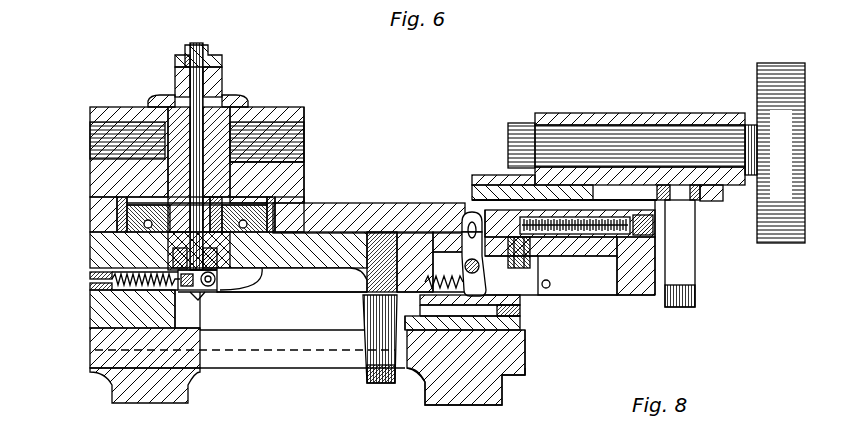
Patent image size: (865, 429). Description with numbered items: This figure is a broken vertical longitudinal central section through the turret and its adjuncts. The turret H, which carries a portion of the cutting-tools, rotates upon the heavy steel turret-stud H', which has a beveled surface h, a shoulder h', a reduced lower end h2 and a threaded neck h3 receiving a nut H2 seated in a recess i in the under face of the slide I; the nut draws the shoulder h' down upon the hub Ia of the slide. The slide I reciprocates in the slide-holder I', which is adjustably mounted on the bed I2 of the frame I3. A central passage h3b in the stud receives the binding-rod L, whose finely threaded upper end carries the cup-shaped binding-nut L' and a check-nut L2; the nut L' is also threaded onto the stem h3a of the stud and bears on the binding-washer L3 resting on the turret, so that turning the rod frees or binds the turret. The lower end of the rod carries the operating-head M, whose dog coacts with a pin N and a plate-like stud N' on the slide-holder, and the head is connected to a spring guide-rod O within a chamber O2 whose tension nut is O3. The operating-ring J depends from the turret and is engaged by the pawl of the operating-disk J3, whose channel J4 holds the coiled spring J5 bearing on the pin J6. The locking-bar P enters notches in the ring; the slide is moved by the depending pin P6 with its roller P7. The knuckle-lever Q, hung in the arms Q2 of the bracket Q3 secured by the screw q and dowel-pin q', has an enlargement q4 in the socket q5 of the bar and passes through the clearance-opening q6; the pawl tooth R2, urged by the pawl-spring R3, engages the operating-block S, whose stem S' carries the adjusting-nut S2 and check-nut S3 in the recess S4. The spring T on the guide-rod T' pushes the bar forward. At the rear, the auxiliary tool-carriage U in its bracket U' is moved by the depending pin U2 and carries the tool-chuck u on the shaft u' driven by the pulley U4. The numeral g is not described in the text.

The turret H is at (197, 140).
The turret-stud H' is at (179, 121).
The beveled surface h is at (149, 188).
The threaded neck h3 is at (175, 258).
The screw-threaded stem h3a is at (224, 82).
The central longitudinal passage h3b is at (305, 118).
The shoulder h' is at (274, 170).
The reduced lower end h2 is at (250, 205).
The binding-rod L is at (211, 82).
The binding-nut L' is at (209, 53).
The check-nut L2 is at (205, 47).
The binding-washer L3 is at (163, 97).
The hub of the slide Ia is at (120, 213).
The operating-ring J is at (125, 216).
The operating-disk J3 is at (128, 222).
The segmental channel J4 is at (92, 237).
The coiled spring J5 is at (300, 211).
The operating pin J6 is at (251, 292).
The groove g is at (140, 230).
The spring guide-rod O is at (92, 279).
The chamber O2 is at (100, 292).
The nut O3 is at (108, 289).
The nut H2 is at (222, 280).
The slide I is at (317, 318).
The slide-holder I' is at (117, 309).
The bed I2 is at (92, 345).
The frame I3 is at (125, 380).
The recess i is at (213, 270).
The pin N is at (219, 311).
The flat plate-like stud N' is at (187, 309).
The operating-head M is at (207, 298).
The locking-bar P is at (395, 240).
The depending pin P6 is at (382, 232).
The antifriction-roller P7 is at (367, 378).
The rearwardly-facing tooth R2 is at (425, 302).
The pawl-spring R3 is at (365, 291).
The knuckle-lever Q is at (480, 215).
The arms of the bracket Q2 is at (444, 271).
The bracket Q3 is at (550, 275).
The screw q is at (513, 272).
The dowel-pin q' is at (551, 262).
The knuckle-like enlargement q4 is at (488, 217).
The socket q5 is at (466, 215).
The clearance-opening q6 is at (436, 226).
The operating-block S is at (465, 307).
The threaded stem S' is at (466, 376).
The adjusting-nut S2 is at (522, 318).
The check-nut S3 is at (522, 300).
The threaded recess S4 is at (522, 341).
The spring T is at (570, 251).
The guide-rod T' is at (570, 247).
The auxiliary tool-carriage U is at (640, 140).
The bracket U' is at (596, 176).
The depending pin U2 is at (688, 270).
The pulley U4 is at (795, 50).
The tool-chuck u is at (521, 133).
The shaft u' is at (707, 136).